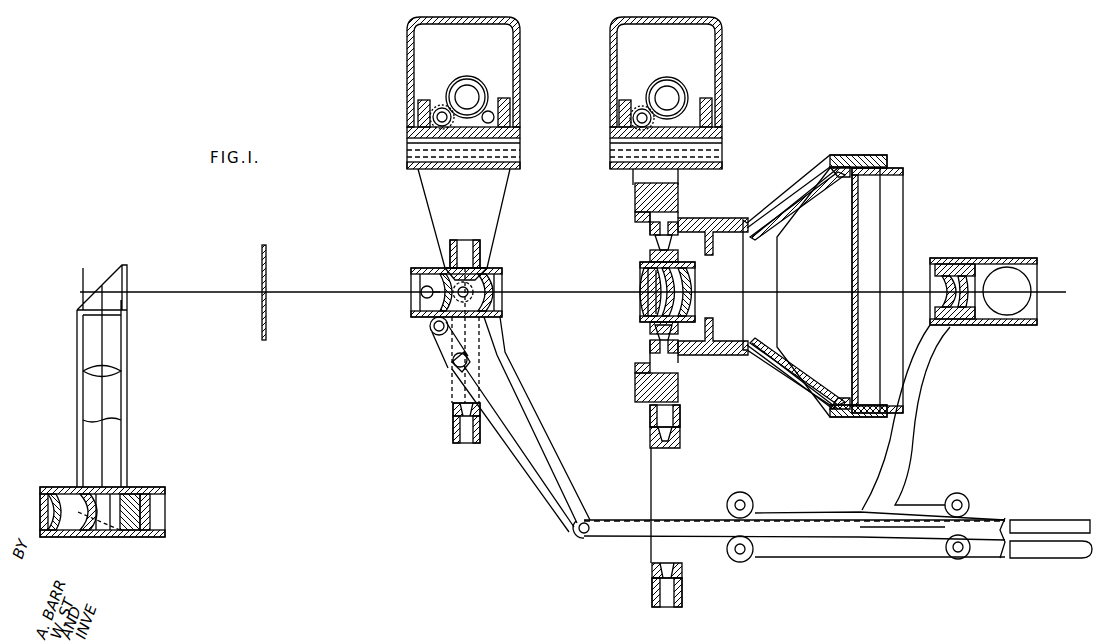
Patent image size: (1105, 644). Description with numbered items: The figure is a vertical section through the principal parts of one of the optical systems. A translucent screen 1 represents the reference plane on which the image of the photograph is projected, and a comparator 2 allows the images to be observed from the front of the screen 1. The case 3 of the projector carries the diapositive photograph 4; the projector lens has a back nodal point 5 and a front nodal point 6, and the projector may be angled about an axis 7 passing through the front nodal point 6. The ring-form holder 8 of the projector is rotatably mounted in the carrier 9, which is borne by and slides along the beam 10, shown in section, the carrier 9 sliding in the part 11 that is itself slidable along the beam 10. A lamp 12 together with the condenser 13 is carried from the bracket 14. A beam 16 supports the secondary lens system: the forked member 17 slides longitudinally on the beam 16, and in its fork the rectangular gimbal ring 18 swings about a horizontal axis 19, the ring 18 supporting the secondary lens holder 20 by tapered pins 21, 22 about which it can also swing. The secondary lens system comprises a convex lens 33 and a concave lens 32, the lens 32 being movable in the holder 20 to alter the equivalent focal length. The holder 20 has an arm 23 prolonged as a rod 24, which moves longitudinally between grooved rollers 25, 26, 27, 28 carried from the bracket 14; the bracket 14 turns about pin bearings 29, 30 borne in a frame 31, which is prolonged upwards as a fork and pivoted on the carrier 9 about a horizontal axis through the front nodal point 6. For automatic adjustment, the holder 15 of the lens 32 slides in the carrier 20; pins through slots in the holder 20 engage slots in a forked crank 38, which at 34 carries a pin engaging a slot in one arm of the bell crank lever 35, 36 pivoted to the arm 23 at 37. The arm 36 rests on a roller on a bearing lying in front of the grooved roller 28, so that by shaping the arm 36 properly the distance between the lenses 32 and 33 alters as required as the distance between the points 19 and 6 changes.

The translucent screen 1 is at (268, 315).
The comparator 2 is at (127, 400).
The case of the projector 3 is at (795, 190).
The diapositive photograph 4 is at (858, 222).
The back nodal point 5 is at (690, 285).
The front nodal point 6 is at (654, 285).
The axis 7 is at (665, 356).
The holder of the projector 8 is at (636, 217).
The carrier 9 is at (636, 192).
The beam 10 is at (722, 77).
The part 11 is at (712, 128).
The lamp 12 is at (1002, 262).
The condenser 13 is at (950, 325).
The bracket 14 is at (920, 437).
The holder of the lens 15 is at (425, 300).
The beam 16 is at (407, 80).
The forked member 17 is at (407, 133).
The rectangular gimbal ring 18 is at (458, 240).
The horizontal axis 19 is at (490, 317).
The secondary lens holder 20 is at (433, 268).
The tapered pin 21 is at (483, 273).
The tapered pin 22 is at (453, 415).
The arm 23 is at (527, 420).
The rod 24 is at (1043, 519).
The grooved roller 25 is at (748, 495).
The grooved roller 26 is at (748, 560).
The grooved roller 27 is at (962, 494).
The grooved roller 28 is at (965, 557).
The pin bearing 29 is at (652, 574).
The pin bearing 30 is at (680, 432).
The frame 31 is at (651, 418).
The concave lens 32 is at (437, 282).
The convex lens 33 is at (492, 300).
The pin 34 is at (452, 365).
The bell crank lever arm 35 is at (497, 443).
The bell crank lever arm 36 is at (930, 532).
The pivot 37 is at (577, 530).
The forked crank 38 is at (431, 331).